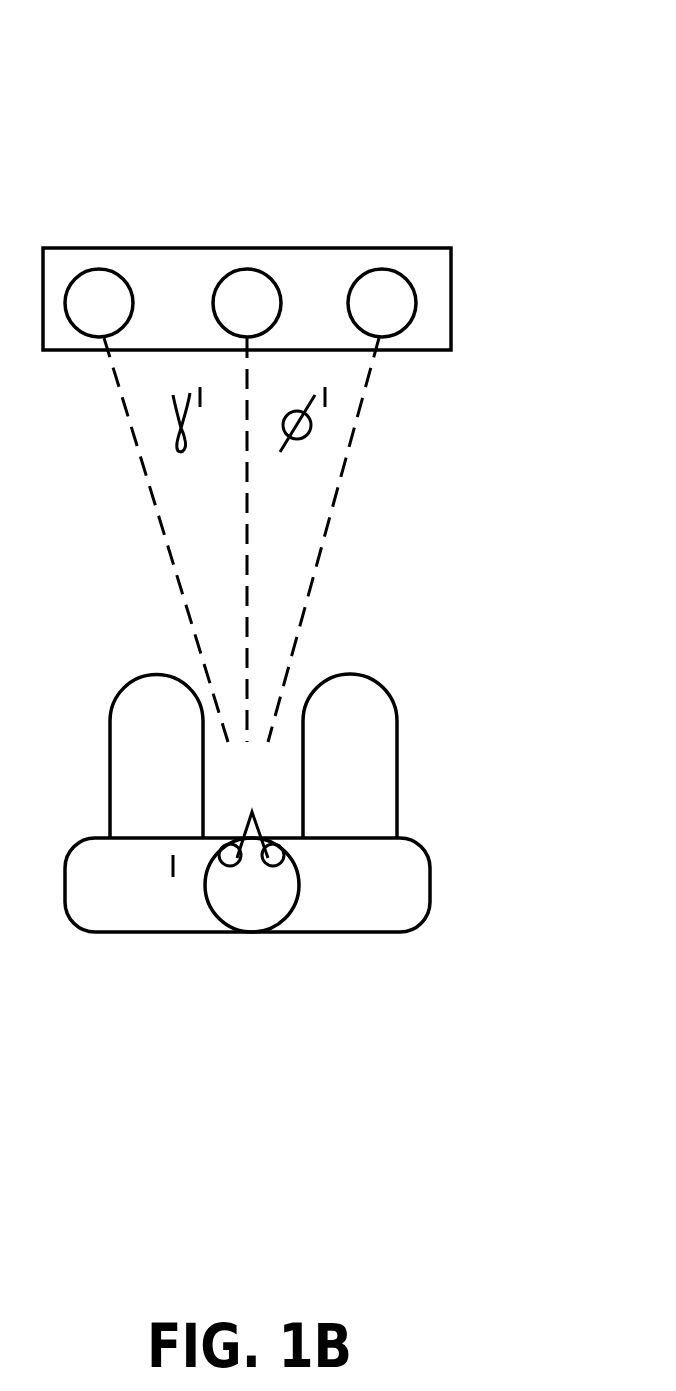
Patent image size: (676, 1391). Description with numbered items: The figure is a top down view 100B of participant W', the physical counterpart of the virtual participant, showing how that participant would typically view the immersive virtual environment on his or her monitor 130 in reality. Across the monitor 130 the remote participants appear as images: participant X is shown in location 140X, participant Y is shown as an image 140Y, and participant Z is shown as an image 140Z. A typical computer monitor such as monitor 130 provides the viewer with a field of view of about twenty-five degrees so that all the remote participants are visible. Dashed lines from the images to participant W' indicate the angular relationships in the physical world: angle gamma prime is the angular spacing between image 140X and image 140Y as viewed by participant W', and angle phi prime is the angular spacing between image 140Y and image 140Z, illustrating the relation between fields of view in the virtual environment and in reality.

The top down view 100B is at (290, 40).
The monitor 130 is at (452, 293).
The image of participant X 140X is at (100, 248).
The image of participant Y 140Y is at (247, 248).
The image of participant Z 140Z is at (383, 248).